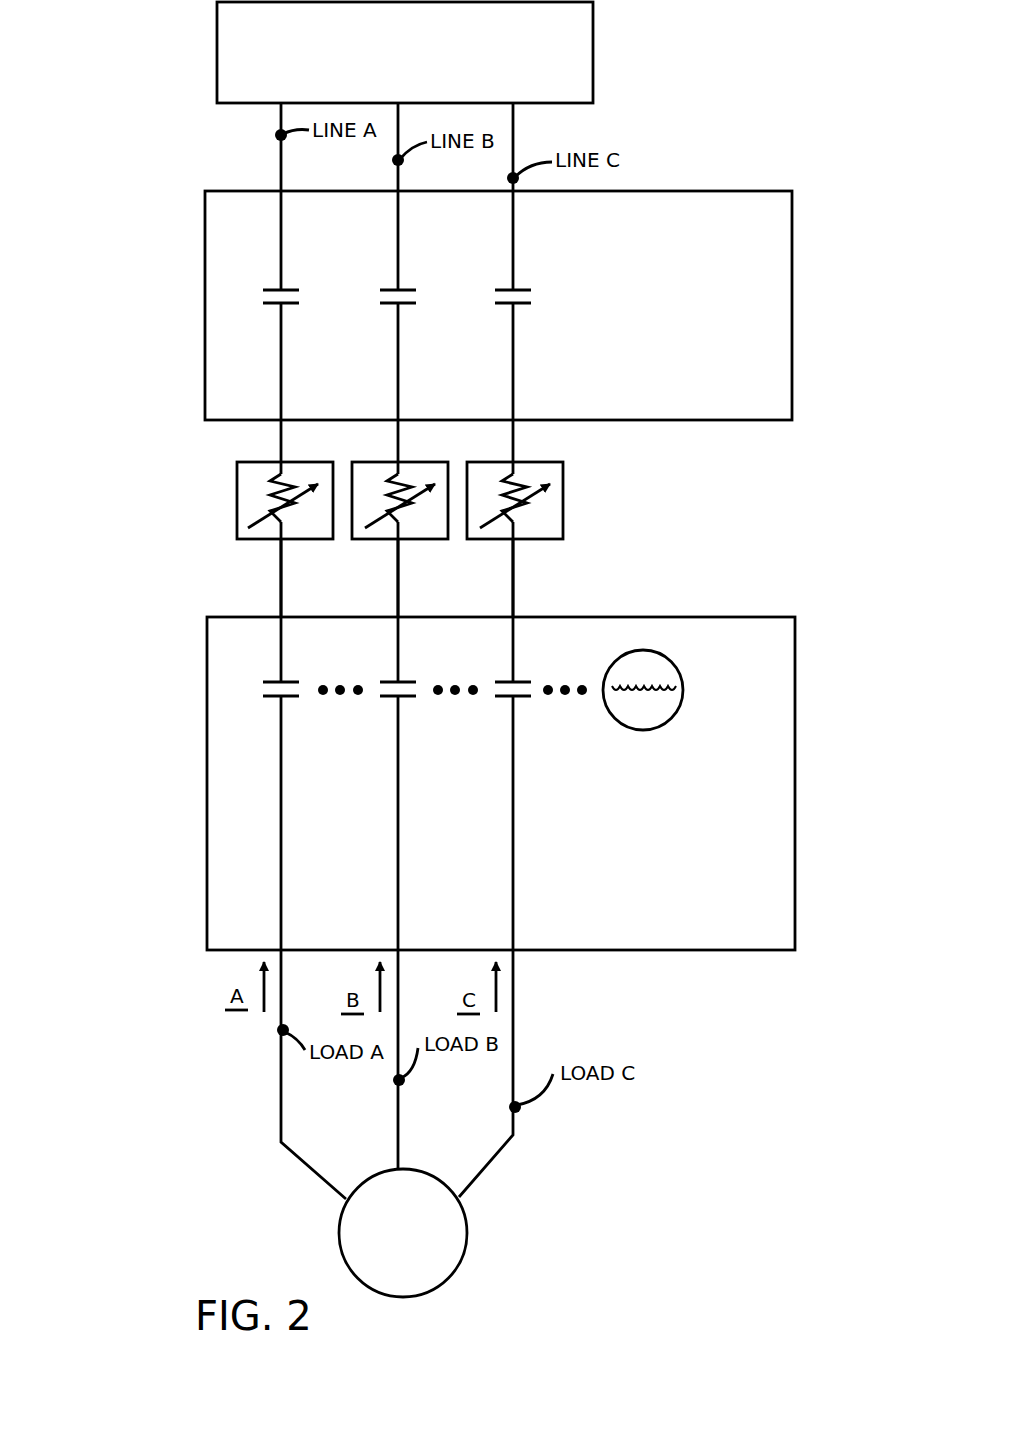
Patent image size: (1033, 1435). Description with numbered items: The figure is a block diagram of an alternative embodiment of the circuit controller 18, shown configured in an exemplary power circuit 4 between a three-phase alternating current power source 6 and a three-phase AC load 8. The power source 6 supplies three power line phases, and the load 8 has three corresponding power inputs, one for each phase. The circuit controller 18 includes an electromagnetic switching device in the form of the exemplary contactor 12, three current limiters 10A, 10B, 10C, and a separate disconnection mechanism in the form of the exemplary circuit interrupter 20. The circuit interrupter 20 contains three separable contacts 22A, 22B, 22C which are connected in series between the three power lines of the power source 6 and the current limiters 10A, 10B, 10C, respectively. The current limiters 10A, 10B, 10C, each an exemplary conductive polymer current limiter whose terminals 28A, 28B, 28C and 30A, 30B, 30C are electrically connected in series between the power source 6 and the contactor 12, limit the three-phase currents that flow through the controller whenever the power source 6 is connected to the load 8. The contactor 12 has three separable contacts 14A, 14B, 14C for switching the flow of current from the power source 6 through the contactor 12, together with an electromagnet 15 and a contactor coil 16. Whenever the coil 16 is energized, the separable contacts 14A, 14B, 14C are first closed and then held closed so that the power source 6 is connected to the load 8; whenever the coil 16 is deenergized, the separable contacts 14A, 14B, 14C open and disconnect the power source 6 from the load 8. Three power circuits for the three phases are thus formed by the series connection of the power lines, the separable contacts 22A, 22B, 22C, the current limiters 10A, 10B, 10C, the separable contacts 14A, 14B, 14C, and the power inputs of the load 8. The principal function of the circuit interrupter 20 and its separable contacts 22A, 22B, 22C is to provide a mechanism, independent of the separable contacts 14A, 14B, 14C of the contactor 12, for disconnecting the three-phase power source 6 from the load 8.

The three-phase alternating current power source 6 is at (583, 57).
The circuit interrupter 20 is at (688, 191).
The separable contact 22A is at (285, 288).
The separable contact 22B is at (402, 288).
The separable contact 22C is at (517, 288).
The current limiter 10A is at (315, 540).
The current limiter 10B is at (430, 540).
The current limiter 10C is at (545, 540).
The varistor A 28A is at (284, 462).
The varistor B 28B is at (401, 462).
The varistor C 28C is at (516, 462).
The lead A 30A is at (287, 540).
The lead B 30B is at (404, 540).
The lead C 30C is at (519, 540).
The circuit controller 18 is at (190, 400).
The contactor 12 is at (710, 950).
The separable contact 14A is at (287, 680).
The separable contact 14B is at (404, 680).
The separable contact 14C is at (519, 680).
The electromagnet 15 is at (582, 710).
The contactor coil 16 is at (652, 662).
The three-phase AC load 8 is at (456, 1235).
The power circuit 4 is at (590, 1289).